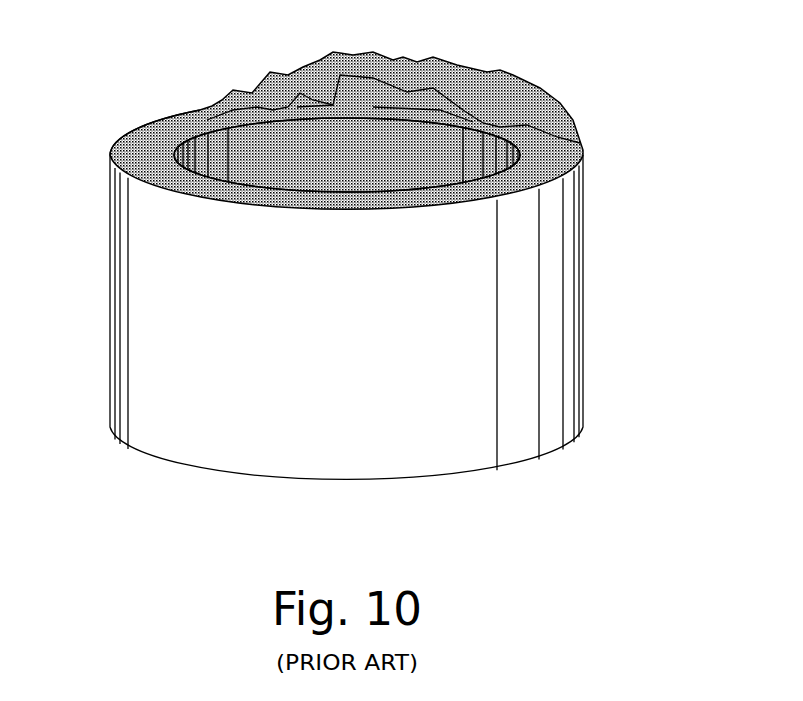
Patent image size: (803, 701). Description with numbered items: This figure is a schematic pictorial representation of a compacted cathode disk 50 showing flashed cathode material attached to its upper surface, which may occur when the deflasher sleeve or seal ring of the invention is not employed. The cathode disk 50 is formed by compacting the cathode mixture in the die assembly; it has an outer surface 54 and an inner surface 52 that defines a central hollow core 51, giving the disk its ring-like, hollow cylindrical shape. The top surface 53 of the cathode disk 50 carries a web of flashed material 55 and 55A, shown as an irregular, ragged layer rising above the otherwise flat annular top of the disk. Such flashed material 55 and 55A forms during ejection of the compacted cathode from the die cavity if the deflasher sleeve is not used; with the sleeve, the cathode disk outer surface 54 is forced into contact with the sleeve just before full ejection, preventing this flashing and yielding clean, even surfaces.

The cathode disk 50 is at (585, 205).
The central hollow core 51 is at (224, 143).
The inner surface 52 is at (200, 115).
The top surface 53 is at (193, 140).
The outer surface 54 is at (135, 220).
The flashed material 55 is at (515, 70).
The flashed material 55A is at (560, 137).